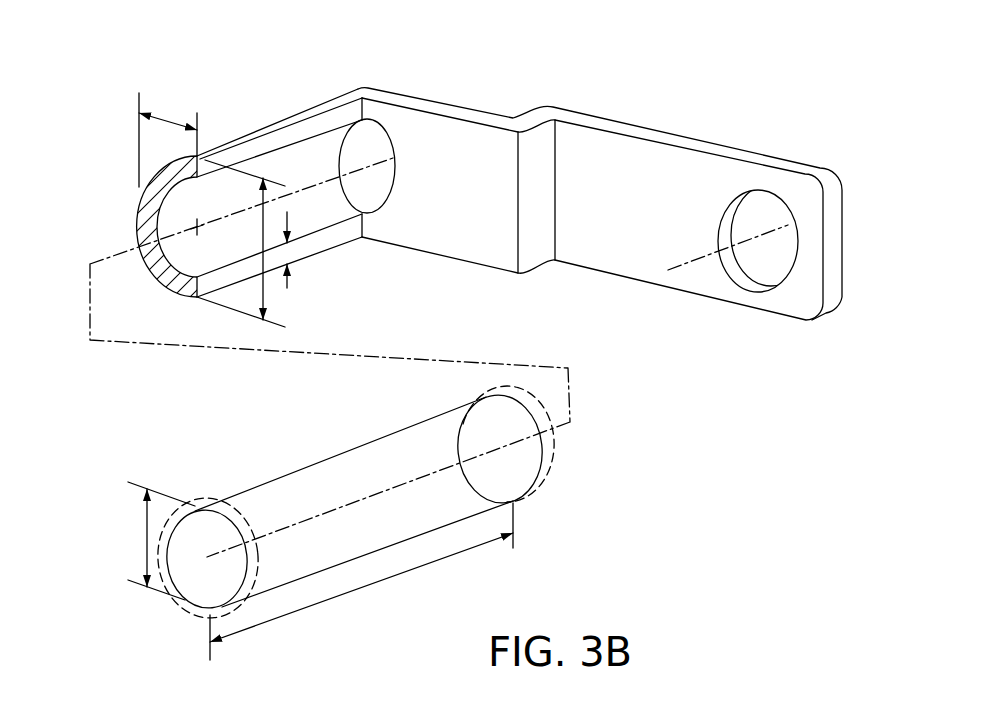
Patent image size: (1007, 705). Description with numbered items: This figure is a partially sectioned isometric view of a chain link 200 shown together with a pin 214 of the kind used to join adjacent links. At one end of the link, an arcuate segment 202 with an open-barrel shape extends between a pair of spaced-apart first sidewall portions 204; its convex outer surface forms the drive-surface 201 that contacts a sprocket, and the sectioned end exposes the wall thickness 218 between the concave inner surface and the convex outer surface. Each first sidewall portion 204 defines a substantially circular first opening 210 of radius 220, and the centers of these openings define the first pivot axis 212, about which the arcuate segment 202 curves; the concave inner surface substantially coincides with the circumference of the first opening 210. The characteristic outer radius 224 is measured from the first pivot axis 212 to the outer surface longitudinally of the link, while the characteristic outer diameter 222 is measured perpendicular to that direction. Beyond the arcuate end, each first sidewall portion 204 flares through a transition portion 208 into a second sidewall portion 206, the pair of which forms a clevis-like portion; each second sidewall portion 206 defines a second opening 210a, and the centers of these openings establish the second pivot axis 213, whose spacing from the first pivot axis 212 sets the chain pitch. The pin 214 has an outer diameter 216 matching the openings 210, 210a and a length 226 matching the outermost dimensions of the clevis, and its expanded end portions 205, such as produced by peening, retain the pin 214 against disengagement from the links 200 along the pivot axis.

The chain link 200 is at (421, 284).
The drive-surface 201 is at (182, 207).
The arcuate segment 202 is at (155, 265).
The first sidewall portion 204 is at (478, 145).
The expanded end portion 205 is at (193, 613).
The second sidewall portion 206 is at (653, 170).
The transition portion 208 is at (540, 264).
The first opening 210 is at (392, 170).
The second opening 210a is at (743, 273).
The first pivot axis 212 is at (110, 258).
The second pivot axis 213 is at (703, 256).
The pin 214 is at (332, 524).
The outer diameter 216 is at (145, 540).
The wall thickness 218 is at (285, 253).
The radius 220 is at (182, 262).
The characteristic outer diameter 222 is at (265, 288).
The characteristic outer radius 224 is at (167, 122).
The length 226 is at (338, 598).